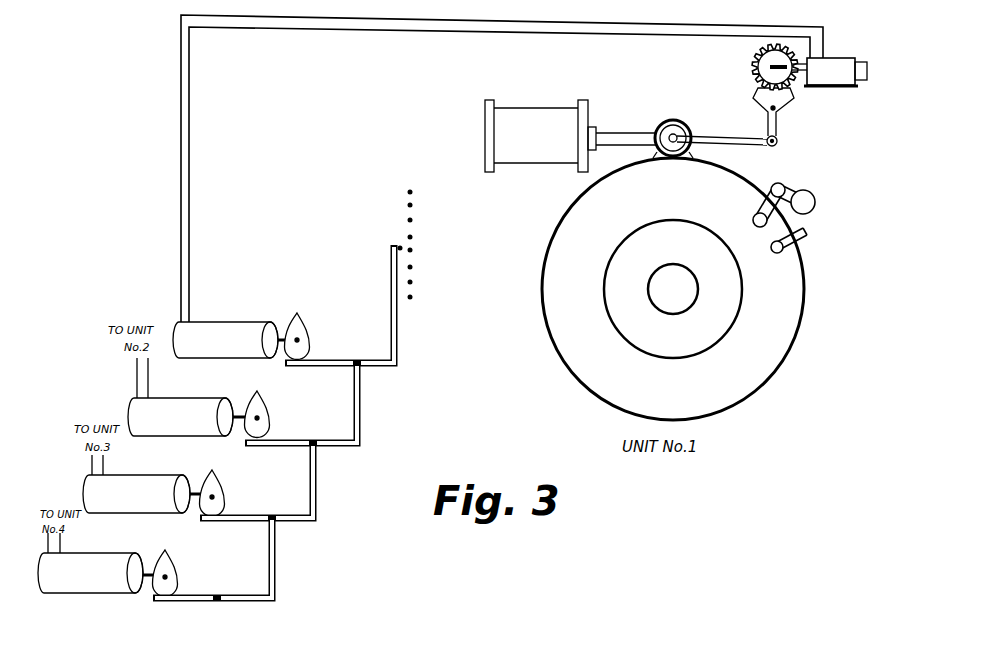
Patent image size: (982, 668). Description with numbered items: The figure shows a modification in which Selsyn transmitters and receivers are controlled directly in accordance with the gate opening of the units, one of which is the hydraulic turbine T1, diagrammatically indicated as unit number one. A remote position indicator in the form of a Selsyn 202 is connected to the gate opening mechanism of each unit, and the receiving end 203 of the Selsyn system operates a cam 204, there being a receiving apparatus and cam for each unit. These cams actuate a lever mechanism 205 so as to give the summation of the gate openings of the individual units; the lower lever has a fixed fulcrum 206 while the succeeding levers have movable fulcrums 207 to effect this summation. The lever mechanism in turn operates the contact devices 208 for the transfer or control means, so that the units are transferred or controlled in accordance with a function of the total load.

The Selsyn 202 is at (818, 87).
The receiving end 203 is at (227, 323).
The cam 204 is at (308, 330).
The lever mechanism 205 is at (375, 383).
The fixed fulcrum 206 is at (219, 603).
The movable fulcrums 207 is at (363, 355).
The contact devices 208 is at (395, 245).
The hydraulic turbine T1 is at (763, 372).